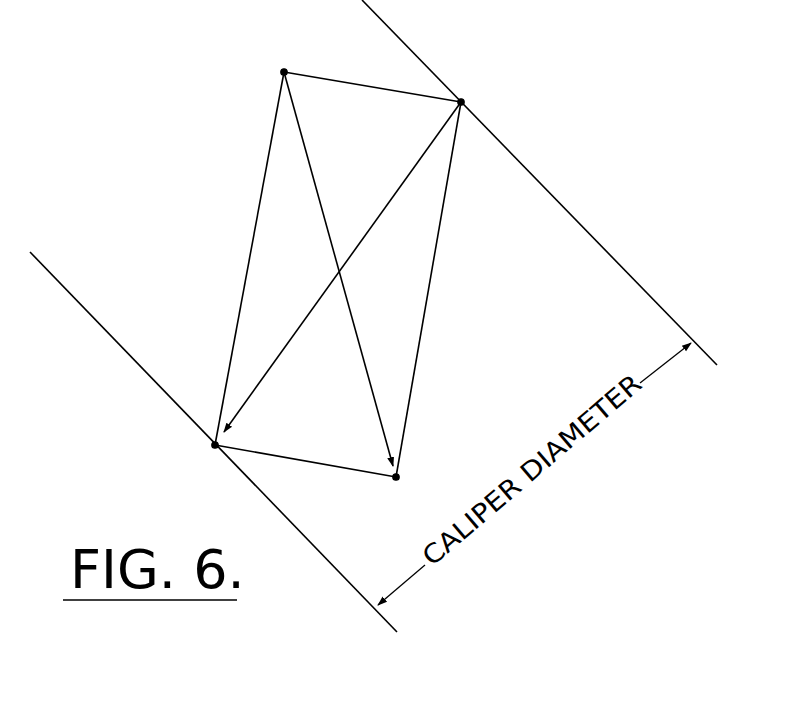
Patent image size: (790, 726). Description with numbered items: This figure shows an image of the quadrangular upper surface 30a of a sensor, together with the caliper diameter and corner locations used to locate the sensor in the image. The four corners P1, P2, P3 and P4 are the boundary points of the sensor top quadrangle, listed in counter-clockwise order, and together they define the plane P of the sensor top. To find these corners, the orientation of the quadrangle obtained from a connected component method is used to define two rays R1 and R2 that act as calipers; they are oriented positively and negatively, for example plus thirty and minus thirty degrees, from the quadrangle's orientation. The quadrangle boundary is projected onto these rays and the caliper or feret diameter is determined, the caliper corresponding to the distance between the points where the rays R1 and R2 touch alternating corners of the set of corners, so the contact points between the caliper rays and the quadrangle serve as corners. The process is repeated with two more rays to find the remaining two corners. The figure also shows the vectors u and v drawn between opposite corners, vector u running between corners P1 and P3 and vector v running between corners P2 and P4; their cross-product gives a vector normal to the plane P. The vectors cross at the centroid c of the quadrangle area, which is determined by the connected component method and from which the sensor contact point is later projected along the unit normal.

The upper surface 30a is at (592, 167).
The first ray R1 is at (472, 55).
The second ray R2 is at (196, 450).
The plane P is at (381, 134).
The corner P1 is at (479, 87).
The corner P2 is at (304, 57).
The corner P3 is at (205, 461).
The corner P4 is at (416, 468).
The centroid c is at (351, 272).
The vector u is at (342, 267).
The vector v is at (338, 269).